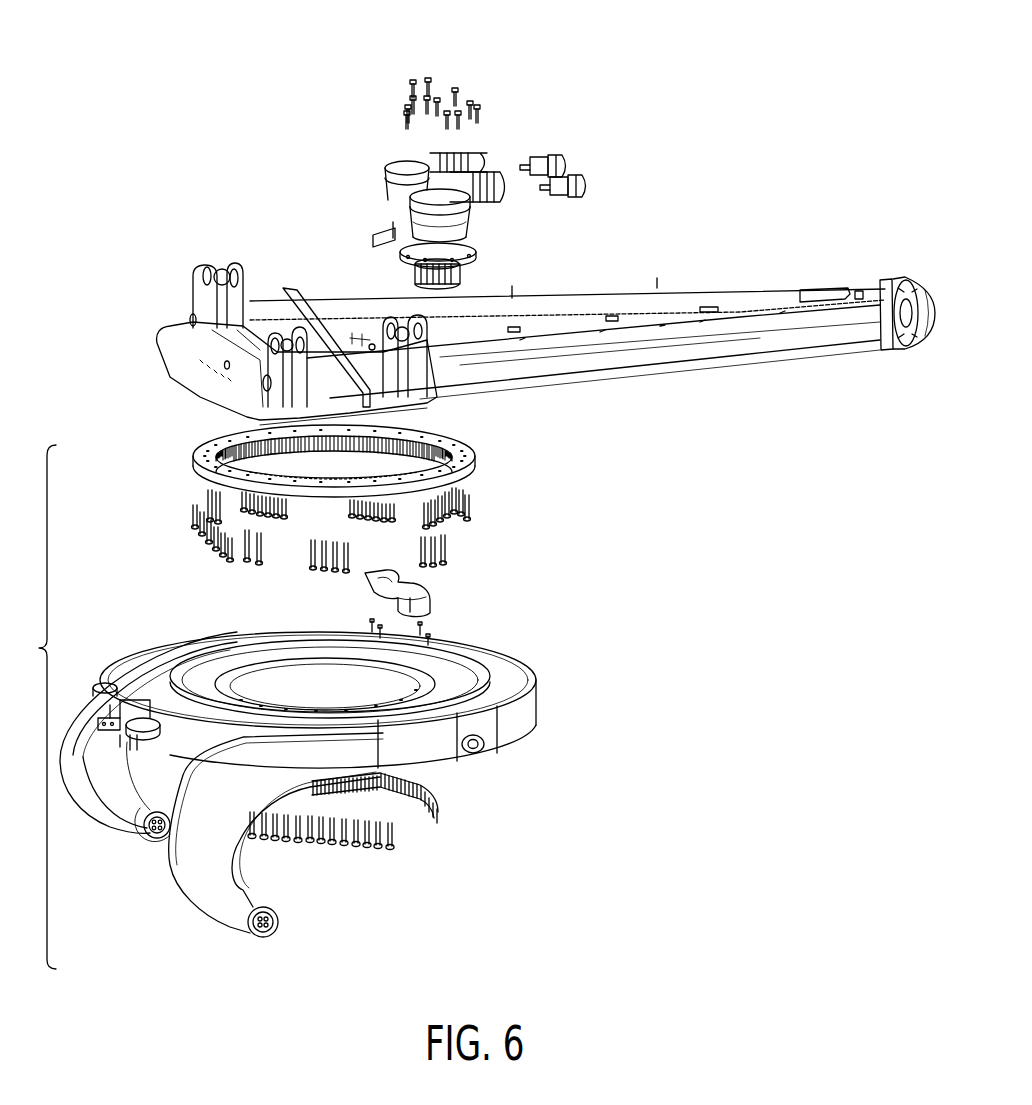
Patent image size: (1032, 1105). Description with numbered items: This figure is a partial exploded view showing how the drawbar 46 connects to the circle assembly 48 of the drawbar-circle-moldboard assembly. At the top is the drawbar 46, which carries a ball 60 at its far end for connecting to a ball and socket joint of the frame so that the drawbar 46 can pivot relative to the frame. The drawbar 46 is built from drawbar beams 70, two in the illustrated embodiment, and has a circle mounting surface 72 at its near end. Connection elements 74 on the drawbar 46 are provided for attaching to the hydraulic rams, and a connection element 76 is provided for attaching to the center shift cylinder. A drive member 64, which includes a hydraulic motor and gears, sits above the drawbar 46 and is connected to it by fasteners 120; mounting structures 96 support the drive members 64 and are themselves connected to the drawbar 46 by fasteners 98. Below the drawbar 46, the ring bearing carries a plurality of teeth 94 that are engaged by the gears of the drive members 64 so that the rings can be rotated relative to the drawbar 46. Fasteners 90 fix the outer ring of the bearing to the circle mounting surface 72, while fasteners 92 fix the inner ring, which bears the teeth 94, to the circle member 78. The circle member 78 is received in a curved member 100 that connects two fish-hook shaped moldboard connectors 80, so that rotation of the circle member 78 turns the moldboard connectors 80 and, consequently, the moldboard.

The drawbar 46 is at (718, 372).
The circle assembly 48 is at (36, 707).
The ball 60 is at (913, 278).
The drive members 64 is at (503, 142).
The drawbar beams 70 is at (630, 313).
The circle mounting surface 72 is at (183, 355).
The connection elements 74 is at (222, 262).
The connection element 76 is at (392, 305).
The circle member 78 is at (505, 672).
The moldboard connectors 80 is at (110, 805).
The fasteners 90 is at (476, 547).
The fasteners 92 is at (445, 812).
The teeth 94 is at (345, 462).
The mounting structures 96 is at (392, 596).
The fasteners 98 is at (428, 633).
The curved member 100 is at (525, 720).
The fasteners 120 is at (467, 88).